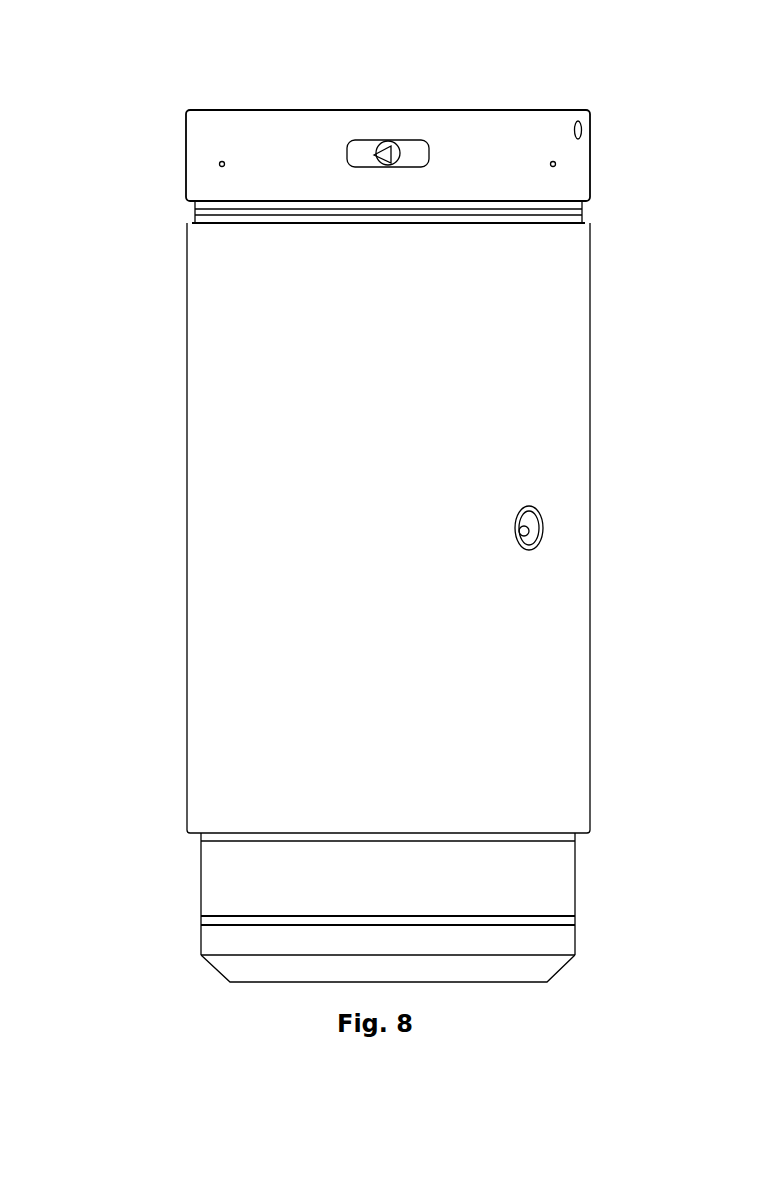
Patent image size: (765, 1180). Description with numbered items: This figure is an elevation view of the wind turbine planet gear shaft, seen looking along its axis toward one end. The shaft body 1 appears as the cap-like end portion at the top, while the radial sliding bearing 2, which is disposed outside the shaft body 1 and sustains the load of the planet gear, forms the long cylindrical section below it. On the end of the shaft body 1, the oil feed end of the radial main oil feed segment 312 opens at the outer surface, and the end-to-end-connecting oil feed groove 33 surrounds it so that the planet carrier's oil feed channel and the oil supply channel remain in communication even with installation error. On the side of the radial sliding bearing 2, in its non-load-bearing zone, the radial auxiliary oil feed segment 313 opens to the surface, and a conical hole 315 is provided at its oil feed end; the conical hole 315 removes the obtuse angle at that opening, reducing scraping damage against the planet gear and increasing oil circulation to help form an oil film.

The shaft body 1 is at (322, 155).
The radial sliding bearing 2 is at (322, 528).
The end-to-end-connecting oil feed groove 33 is at (383, 96).
The radial main oil feed segment 312 is at (311, 95).
The conical hole 315 is at (601, 503).
The radial auxiliary oil feed segment 313 is at (603, 538).